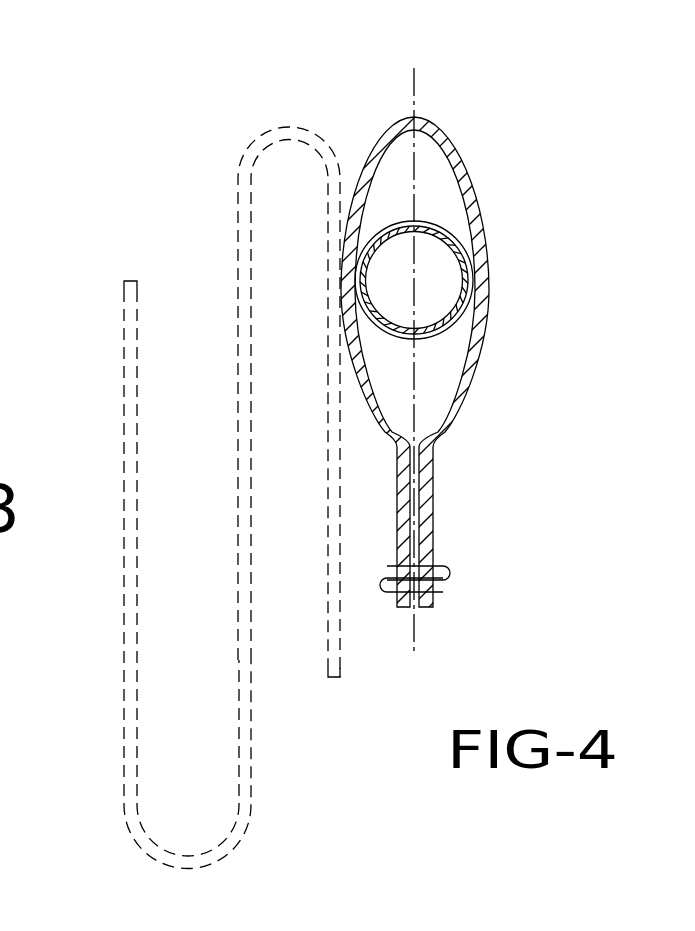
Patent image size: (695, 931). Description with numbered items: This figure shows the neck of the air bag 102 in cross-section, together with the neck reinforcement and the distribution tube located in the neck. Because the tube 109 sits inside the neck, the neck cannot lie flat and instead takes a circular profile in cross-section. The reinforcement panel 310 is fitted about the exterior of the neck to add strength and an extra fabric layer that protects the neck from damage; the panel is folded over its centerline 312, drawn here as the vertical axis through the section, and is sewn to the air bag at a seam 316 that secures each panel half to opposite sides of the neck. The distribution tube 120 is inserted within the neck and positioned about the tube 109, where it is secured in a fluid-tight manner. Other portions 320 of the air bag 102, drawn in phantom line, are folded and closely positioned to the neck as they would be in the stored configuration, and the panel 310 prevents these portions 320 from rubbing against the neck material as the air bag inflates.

The centerline 312 is at (414, 95).
The reinforcement panel 310 is at (487, 210).
The distribution tube 109 is at (473, 278).
The distribution tube 120 is at (413, 340).
The seam 316 is at (447, 568).
The other portions of the air bag 320 is at (125, 360).
The air bag 102 is at (124, 792).